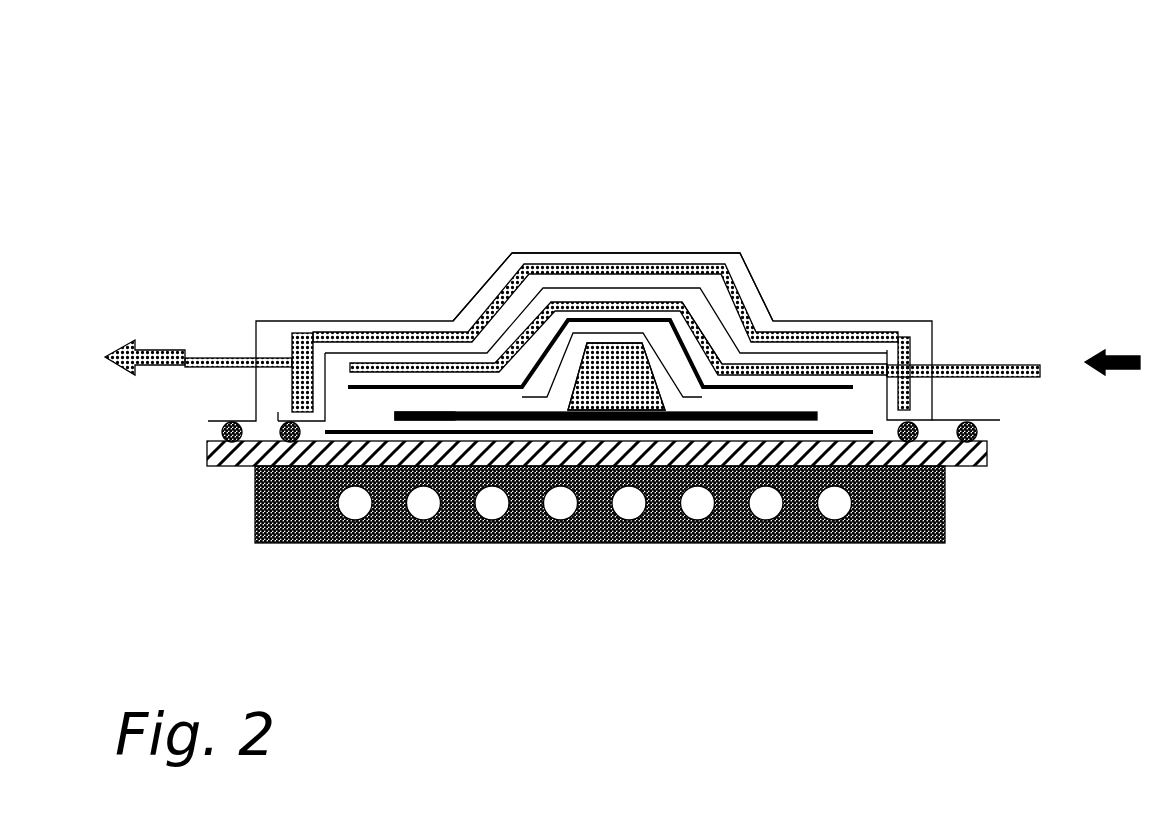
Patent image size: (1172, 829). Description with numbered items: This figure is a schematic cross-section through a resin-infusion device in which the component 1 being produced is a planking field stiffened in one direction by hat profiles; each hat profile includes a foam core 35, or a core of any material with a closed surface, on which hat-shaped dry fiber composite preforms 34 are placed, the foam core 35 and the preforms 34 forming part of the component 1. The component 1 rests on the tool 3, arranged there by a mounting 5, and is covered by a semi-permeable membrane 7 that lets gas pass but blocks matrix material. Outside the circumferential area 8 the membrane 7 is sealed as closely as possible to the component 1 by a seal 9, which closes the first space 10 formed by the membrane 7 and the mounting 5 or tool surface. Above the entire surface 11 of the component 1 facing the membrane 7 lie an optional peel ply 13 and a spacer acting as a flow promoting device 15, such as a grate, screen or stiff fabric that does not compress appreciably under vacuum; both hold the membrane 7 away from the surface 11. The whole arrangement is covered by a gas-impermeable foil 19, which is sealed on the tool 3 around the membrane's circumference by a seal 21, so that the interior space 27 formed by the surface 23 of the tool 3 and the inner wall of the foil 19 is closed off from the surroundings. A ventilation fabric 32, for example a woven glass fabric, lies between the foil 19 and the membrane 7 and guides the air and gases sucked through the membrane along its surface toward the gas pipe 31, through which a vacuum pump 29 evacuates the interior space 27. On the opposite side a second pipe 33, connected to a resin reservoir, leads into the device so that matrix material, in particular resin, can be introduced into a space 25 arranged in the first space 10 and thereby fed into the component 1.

The component 1 is at (485, 405).
The tool 3 is at (995, 468).
The mounting 5 is at (275, 442).
The semi-permeable membrane 7 is at (740, 337).
The circumferential area 8 is at (392, 405).
The seal 9 is at (511, 514).
The first space 10 is at (424, 360).
The surface of the component 11 is at (560, 288).
The peel ply 13 is at (787, 385).
The flow promoting device 15 is at (683, 303).
The foil 19 is at (535, 252).
The seal 21 is at (214, 433).
The surface of the tool 23 is at (1026, 428).
The space 25 is at (855, 393).
The interior space 27 is at (263, 407).
The vacuum pump 29 is at (125, 325).
The gas pipe 31 is at (218, 352).
The ventilation fabric 32 is at (295, 335).
The second pipe 33 is at (960, 362).
The dry fiber composite preform 34 is at (568, 347).
The foam core 35 is at (615, 383).